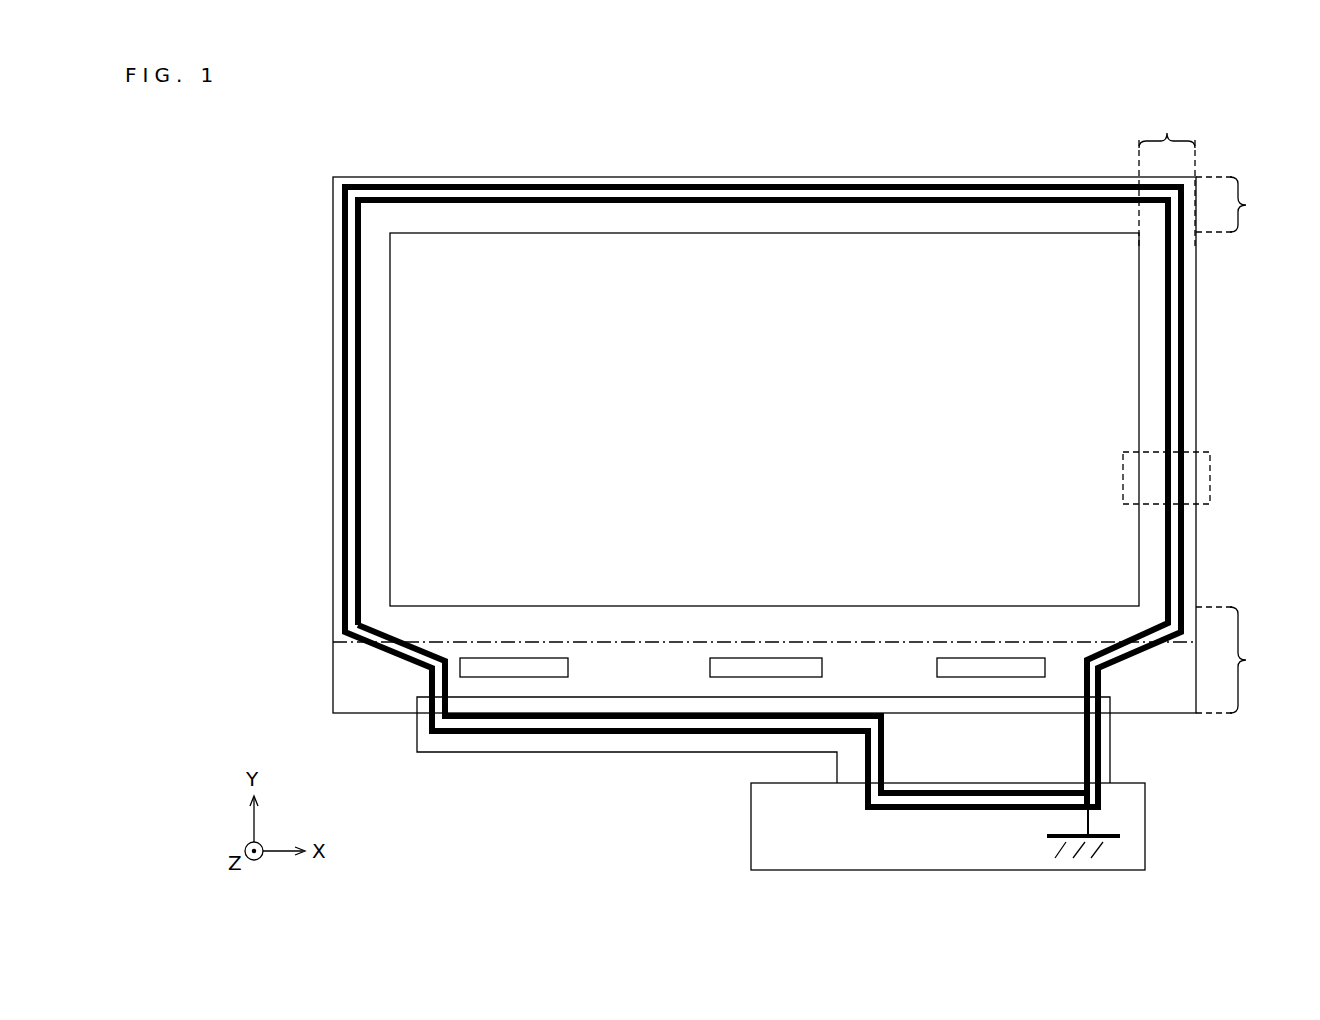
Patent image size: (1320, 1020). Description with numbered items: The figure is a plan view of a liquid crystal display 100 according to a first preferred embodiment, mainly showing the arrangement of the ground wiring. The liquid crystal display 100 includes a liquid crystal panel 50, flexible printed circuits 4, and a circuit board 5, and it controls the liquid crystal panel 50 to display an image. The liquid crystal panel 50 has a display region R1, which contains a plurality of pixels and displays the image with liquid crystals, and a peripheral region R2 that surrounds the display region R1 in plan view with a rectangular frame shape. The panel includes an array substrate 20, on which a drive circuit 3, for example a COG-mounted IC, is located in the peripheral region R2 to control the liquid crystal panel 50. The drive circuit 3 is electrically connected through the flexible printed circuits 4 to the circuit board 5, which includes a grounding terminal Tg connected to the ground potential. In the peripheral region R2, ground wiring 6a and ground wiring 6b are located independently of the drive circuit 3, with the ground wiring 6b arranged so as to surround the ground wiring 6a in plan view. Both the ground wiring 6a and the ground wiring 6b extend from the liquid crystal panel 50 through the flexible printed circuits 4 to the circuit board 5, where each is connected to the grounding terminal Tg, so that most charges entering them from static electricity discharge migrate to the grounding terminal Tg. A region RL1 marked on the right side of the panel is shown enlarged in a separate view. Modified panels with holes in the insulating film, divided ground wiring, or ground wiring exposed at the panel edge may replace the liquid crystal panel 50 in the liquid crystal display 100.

The liquid crystal display 100 is at (1097, 146).
The liquid crystal panel 50 is at (884, 174).
The array substrate 20 is at (1180, 700).
The display region R1 is at (990, 232).
The peripheral region R2 is at (1208, 410).
The region RL1 is at (1210, 452).
The ground wiring 6a is at (365, 481).
The ground wiring 6b is at (345, 481).
The drive circuit 3 is at (937, 658).
The flexible printed circuits 4 is at (1112, 742).
The circuit board 5 is at (1146, 848).
The grounding terminal Tg is at (1112, 830).